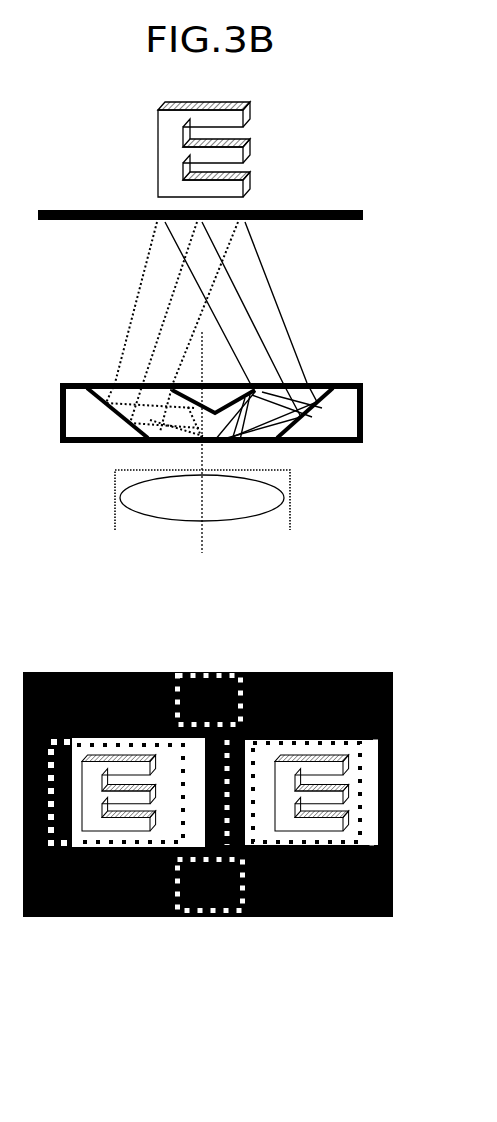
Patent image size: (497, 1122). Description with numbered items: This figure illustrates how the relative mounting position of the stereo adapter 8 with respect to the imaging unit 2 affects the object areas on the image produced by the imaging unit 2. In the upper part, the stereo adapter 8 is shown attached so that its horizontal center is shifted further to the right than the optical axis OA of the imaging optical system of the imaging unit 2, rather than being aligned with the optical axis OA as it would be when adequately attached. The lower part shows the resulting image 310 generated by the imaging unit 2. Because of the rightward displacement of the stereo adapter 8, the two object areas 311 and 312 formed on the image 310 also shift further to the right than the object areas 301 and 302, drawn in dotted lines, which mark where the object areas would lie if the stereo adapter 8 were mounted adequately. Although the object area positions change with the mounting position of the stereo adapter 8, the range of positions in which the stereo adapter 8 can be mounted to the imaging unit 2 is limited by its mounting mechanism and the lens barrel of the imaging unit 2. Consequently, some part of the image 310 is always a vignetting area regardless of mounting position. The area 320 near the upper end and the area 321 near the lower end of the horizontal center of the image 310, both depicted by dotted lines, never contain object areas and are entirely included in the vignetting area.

The stereo adapter 8 is at (78, 458).
The imaging unit 2 is at (291, 518).
The optical axis OA is at (202, 540).
The image 310 is at (205, 832).
The object area 311 is at (163, 828).
The object area 312 is at (372, 845).
The object area 301 is at (43, 770).
The object area 302 is at (365, 770).
The area 320 is at (243, 702).
The area 321 is at (243, 890).